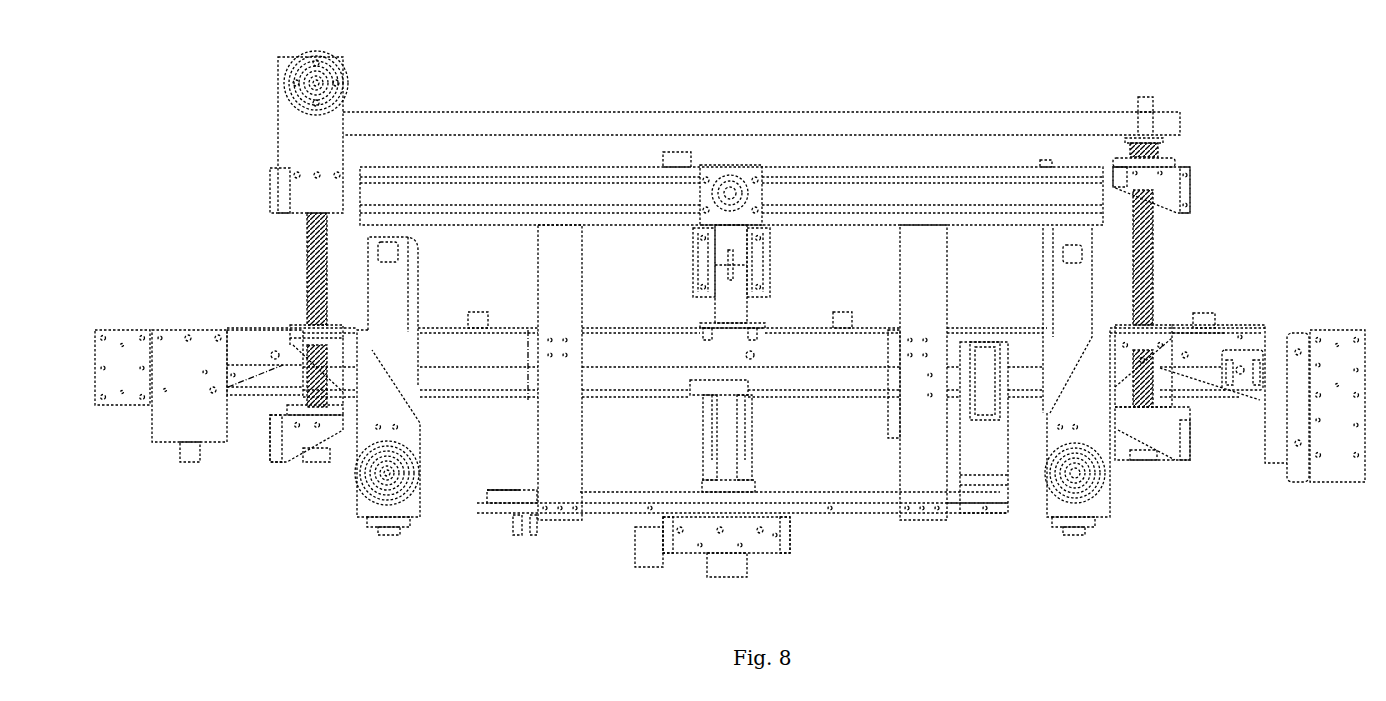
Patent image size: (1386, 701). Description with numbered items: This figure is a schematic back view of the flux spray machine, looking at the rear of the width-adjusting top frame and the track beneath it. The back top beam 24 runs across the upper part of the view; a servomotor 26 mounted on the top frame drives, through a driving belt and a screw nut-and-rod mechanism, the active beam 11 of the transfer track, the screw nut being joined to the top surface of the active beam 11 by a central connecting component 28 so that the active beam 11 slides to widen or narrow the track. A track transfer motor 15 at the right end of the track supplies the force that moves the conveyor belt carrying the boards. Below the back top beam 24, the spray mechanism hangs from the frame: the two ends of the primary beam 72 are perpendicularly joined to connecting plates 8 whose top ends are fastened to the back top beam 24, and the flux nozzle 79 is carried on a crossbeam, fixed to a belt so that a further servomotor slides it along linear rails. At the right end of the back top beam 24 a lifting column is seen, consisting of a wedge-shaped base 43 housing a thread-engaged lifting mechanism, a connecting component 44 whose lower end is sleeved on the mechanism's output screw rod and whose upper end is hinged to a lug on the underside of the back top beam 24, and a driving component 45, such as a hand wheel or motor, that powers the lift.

The connecting plate 8 is at (573, 455).
The active beam 11 is at (1232, 325).
The track transfer motor 15 is at (1340, 470).
The back top beam 24 is at (880, 188).
The servomotor 26 is at (772, 270).
The central connecting component 28 is at (740, 315).
The wedge-shaped base 43 is at (1108, 497).
The connecting component 44 is at (1080, 290).
The driving component 45 is at (1063, 475).
The primary beam 72 is at (857, 497).
The flux nozzle 79 is at (725, 438).